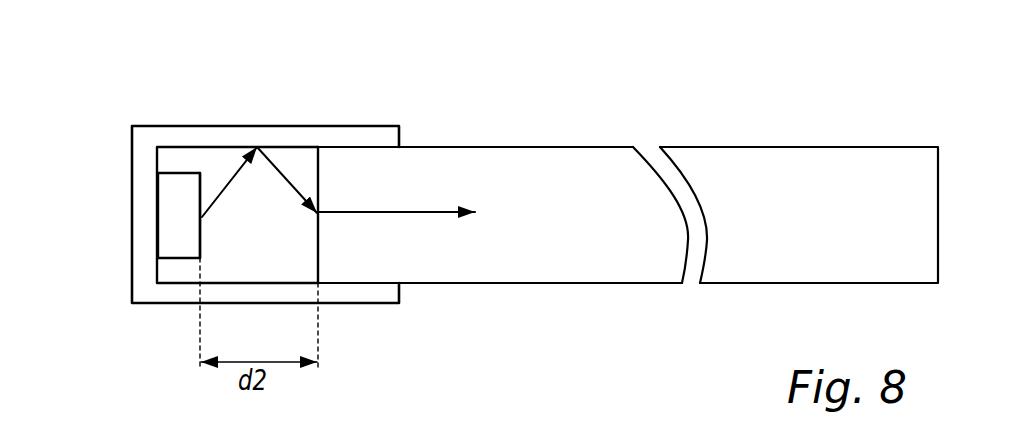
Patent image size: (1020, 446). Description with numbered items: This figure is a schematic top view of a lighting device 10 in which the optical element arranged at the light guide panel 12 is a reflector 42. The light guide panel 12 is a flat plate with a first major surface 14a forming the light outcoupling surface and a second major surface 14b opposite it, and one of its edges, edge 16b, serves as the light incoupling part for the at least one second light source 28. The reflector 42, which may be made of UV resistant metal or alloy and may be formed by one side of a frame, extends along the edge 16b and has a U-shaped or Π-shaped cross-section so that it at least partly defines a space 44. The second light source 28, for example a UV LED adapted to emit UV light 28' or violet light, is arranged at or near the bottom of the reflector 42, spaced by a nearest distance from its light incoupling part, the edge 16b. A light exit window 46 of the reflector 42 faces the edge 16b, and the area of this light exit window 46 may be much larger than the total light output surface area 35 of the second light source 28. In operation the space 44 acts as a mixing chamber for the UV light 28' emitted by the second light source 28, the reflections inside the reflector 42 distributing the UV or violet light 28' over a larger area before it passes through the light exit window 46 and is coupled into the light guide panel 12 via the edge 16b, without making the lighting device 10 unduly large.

The lighting device 10 is at (816, 115).
The light guide panel 12 is at (503, 199).
The first major surface 14a is at (586, 276).
The second major surface 14b is at (482, 147).
The edge 16b is at (322, 245).
The second light source 28 is at (133, 215).
The UV light 28' is at (322, 136).
The light output surface area 35 is at (200, 241).
The reflector 42 is at (132, 157).
The space 44 is at (243, 243).
The light exit window 46 is at (318, 258).